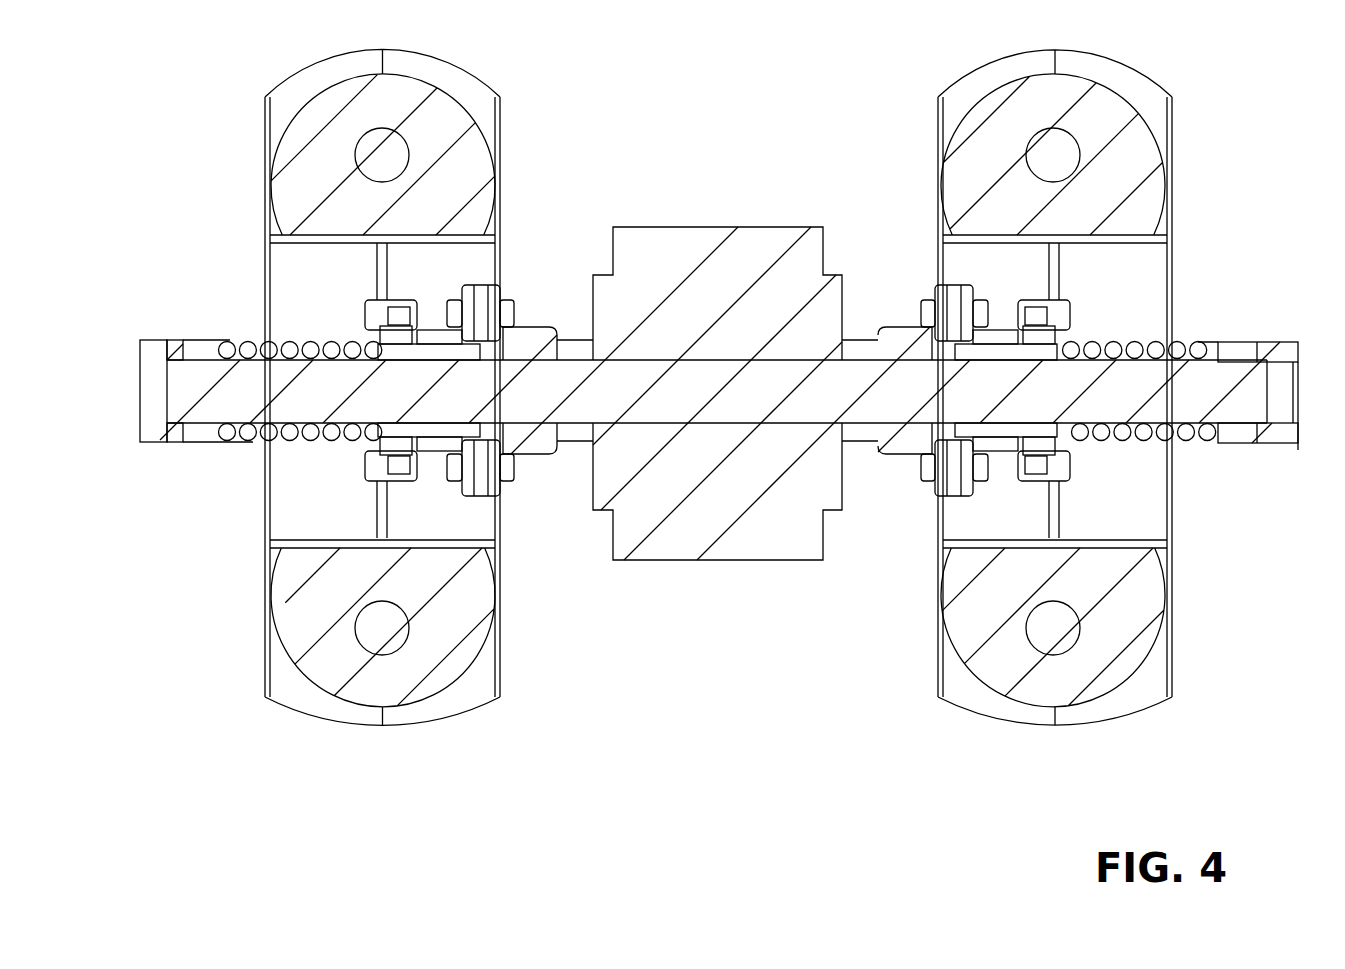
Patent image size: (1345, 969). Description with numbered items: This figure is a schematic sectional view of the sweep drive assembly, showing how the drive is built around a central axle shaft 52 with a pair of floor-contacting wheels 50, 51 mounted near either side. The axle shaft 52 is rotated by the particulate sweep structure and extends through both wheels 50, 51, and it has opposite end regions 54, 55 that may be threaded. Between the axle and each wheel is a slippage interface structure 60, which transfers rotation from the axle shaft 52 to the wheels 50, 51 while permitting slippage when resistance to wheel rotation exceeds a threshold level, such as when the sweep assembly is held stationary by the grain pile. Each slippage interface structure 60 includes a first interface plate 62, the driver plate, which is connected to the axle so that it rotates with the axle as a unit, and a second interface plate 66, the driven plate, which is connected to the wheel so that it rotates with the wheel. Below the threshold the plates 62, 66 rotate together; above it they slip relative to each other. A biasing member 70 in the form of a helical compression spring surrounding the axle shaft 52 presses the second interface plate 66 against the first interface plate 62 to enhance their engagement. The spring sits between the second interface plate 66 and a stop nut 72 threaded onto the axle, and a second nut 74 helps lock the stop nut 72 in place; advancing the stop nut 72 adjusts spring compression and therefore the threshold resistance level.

The wheel 50 is at (1137, 693).
The wheel 51 is at (463, 697).
The axle shaft 52 is at (571, 385).
The end region 54 is at (1243, 400).
The end region 55 is at (212, 392).
The slippage interface structure 60 is at (524, 492).
The first interface plate 62 is at (493, 297).
The second interface plate 66 is at (458, 297).
The biasing member 70 is at (295, 447).
The stop nut 72 is at (200, 345).
The second nut 74 is at (150, 343).